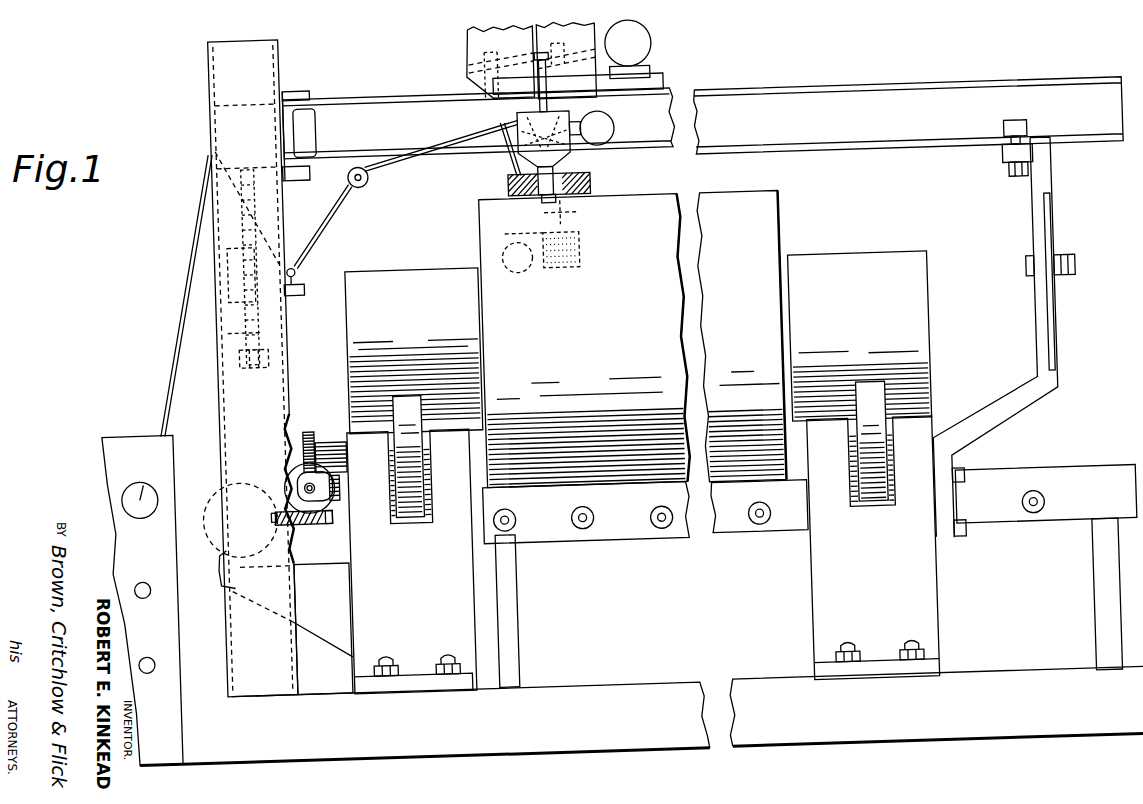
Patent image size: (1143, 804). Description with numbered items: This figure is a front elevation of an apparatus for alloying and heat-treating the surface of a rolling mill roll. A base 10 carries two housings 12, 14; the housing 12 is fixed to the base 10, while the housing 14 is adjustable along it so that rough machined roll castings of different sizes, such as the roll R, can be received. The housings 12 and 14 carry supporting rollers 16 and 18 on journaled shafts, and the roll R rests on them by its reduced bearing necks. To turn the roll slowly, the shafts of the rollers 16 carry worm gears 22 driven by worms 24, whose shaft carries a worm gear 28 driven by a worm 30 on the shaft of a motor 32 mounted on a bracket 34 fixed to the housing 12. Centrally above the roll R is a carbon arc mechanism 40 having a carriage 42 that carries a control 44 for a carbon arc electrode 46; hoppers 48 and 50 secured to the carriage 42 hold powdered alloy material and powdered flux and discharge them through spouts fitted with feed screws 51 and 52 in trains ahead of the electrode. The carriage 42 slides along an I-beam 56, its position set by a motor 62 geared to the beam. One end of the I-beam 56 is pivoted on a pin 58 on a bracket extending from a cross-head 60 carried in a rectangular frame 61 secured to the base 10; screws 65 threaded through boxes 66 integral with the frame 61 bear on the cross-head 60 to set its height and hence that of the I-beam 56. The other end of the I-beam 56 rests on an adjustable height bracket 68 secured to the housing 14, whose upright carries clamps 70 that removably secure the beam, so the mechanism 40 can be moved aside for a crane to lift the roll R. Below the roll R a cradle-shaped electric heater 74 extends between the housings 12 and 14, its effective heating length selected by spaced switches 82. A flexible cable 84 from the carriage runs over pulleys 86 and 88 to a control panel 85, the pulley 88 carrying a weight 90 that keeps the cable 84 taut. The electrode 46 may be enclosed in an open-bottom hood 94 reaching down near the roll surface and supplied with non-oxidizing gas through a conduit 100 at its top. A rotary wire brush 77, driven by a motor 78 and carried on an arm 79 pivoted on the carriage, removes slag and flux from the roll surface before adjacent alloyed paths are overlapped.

The base 10 is at (990, 725).
The housing 12 is at (443, 620).
The housing 14 is at (920, 602).
The supporting roller 16 is at (408, 408).
The supporting roller 18 is at (870, 425).
The worm gear 22 is at (312, 433).
The worm 24 is at (328, 457).
The worm gear 28 is at (300, 525).
The worm 30 is at (328, 525).
The motor 32 is at (218, 503).
The bracket 34 is at (332, 627).
The carbon arc mechanism 40 is at (647, 142).
The carriage 42 is at (660, 82).
The control 44 is at (513, 163).
The carbon arc electrode 46 is at (533, 198).
The hopper 48 is at (633, 40).
The hopper 50 is at (478, 48).
The screw 51 is at (470, 71).
The screw 52 is at (563, 55).
The I-beam 56 is at (836, 103).
The pin 58 is at (292, 93).
The cross-head 60 is at (233, 122).
The rectangular frame 61 is at (238, 393).
The motor 62 is at (640, 57).
The screws 65 is at (220, 338).
The boxes 66 is at (220, 302).
The adjustable height bracket 68 is at (1053, 342).
The clamps 70 is at (1016, 128).
The cradle-shaped heater 74 is at (745, 524).
The rotary wire brush 77 is at (562, 284).
The motor 78 is at (518, 273).
The arm 79 is at (567, 218).
The switches 82 is at (660, 523).
The flexible cable 84 is at (423, 158).
The control panel 85 is at (133, 452).
The pulley 86 is at (365, 183).
The pulley 88 is at (293, 260).
The weight 90 is at (298, 297).
The hood 94 is at (590, 186).
The conduit 100 is at (513, 175).
The roll R is at (768, 233).